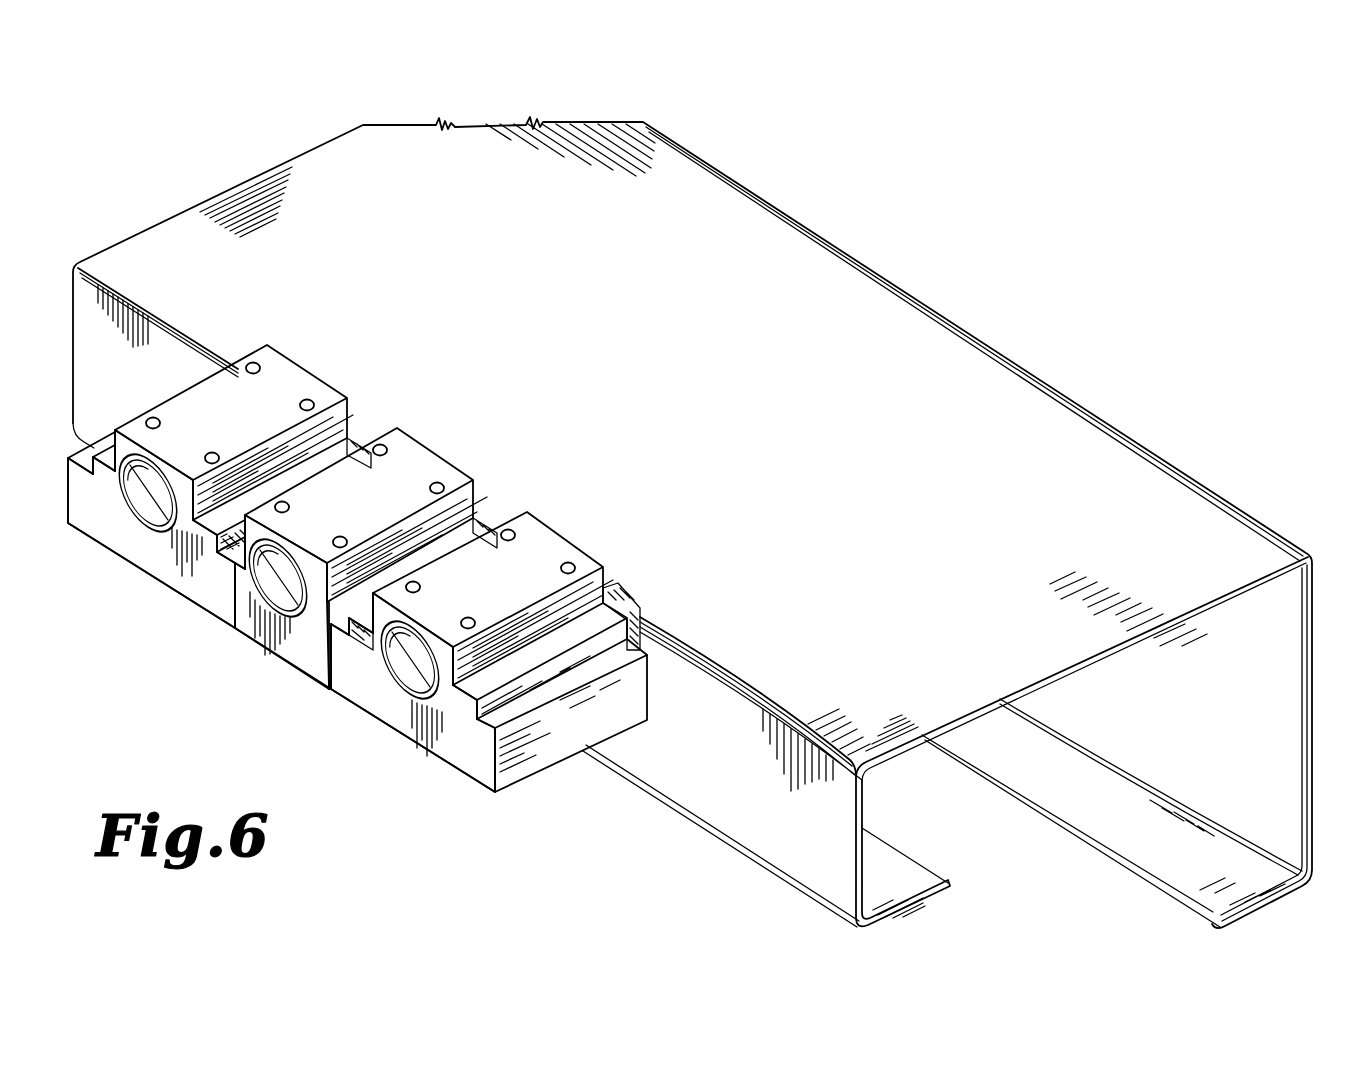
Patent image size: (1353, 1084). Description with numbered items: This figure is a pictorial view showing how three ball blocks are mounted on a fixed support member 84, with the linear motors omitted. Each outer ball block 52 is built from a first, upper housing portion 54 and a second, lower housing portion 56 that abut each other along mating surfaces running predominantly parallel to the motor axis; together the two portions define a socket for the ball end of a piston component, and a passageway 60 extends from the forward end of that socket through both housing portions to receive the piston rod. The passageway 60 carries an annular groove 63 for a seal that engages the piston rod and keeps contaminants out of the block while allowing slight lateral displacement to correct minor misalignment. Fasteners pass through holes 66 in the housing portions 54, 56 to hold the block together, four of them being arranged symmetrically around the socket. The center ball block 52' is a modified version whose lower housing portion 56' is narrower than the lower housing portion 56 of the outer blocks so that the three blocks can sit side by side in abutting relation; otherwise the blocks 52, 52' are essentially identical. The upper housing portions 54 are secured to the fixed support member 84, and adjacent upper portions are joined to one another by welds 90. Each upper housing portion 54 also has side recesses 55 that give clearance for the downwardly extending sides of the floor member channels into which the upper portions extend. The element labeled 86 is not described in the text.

The ball block 52 is at (281, 641).
The modified ball block 52' is at (277, 626).
The first housing portion 54 is at (316, 370).
The side recesses 55 is at (337, 400).
The second housing portion 56 is at (357, 630).
The lower housing portion of modified block 56' is at (292, 638).
The passageway 60 is at (418, 672).
The annular groove 63 is at (142, 512).
The holes 66 is at (384, 446).
The fixed support member 84 is at (882, 498).
The wedge insert 86 is at (642, 622).
The welds 90 is at (362, 602).